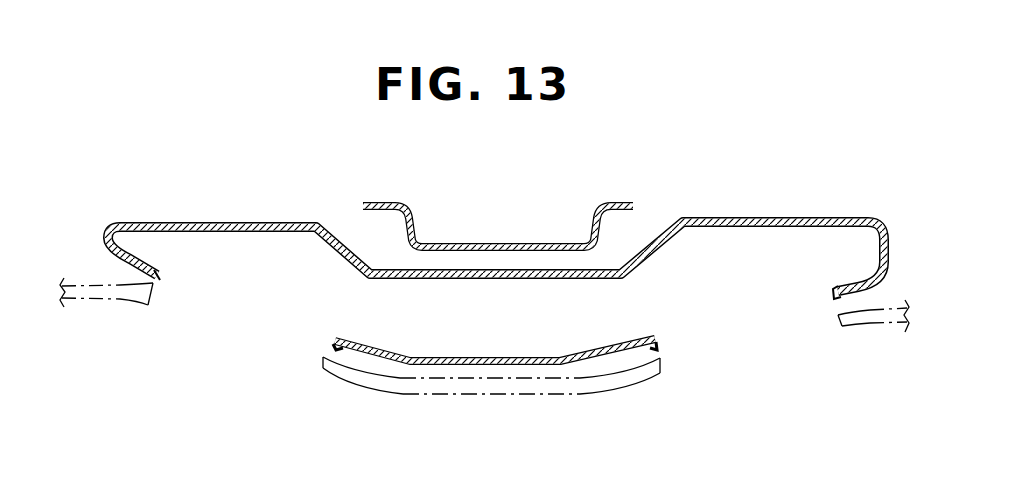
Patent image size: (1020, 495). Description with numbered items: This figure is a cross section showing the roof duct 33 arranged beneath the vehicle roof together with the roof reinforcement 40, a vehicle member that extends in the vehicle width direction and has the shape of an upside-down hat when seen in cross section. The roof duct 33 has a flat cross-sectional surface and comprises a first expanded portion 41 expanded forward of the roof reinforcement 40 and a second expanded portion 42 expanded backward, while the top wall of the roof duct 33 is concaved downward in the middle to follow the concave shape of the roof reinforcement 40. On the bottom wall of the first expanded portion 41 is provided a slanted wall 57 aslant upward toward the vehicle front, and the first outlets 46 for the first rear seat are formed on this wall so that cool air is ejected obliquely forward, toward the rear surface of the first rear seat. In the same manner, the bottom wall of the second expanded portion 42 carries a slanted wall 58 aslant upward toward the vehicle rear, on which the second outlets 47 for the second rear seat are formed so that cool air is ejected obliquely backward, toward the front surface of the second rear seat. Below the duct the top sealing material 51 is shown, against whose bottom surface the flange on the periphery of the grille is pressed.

The roof duct 33 is at (320, 220).
The roof reinforcement 40 is at (492, 243).
The first expanded portion 41 is at (230, 220).
The second expanded portion 42 is at (745, 217).
The first outlets 46 is at (245, 276).
The second outlets 47 is at (727, 280).
The top sealing material 51 is at (525, 397).
The slanted wall 57 is at (350, 353).
The slanted wall 58 is at (630, 360).